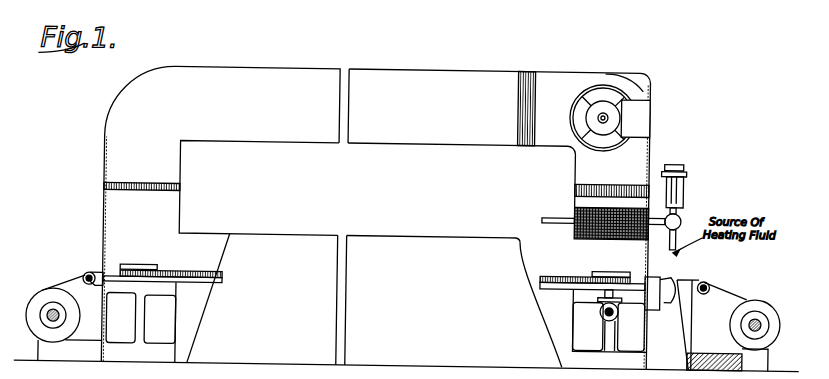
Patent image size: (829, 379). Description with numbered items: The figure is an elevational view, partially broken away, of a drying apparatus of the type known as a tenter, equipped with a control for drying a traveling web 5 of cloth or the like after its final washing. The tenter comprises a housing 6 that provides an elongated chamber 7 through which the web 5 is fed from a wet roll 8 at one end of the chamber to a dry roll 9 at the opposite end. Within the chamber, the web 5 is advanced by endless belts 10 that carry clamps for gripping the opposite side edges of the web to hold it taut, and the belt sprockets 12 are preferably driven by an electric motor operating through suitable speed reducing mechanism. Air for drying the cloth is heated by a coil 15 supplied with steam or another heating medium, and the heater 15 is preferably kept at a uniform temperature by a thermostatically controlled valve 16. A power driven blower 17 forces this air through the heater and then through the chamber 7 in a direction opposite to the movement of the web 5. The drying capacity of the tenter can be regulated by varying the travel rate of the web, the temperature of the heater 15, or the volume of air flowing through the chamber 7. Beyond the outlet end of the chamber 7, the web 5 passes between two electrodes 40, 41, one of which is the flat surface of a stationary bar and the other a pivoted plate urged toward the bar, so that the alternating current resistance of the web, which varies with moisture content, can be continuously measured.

The traveling web 5 is at (69, 285).
The housing 6 is at (303, 242).
The elongated chamber 7 is at (214, 246).
The wet roll 8 is at (44, 296).
The dry roll 9 is at (766, 302).
The endless belts 10 is at (196, 278).
The belt sprockets 12 is at (613, 269).
The coil 15 is at (592, 237).
The thermostatically controlled valve 16 is at (688, 191).
The power driven blower 17 is at (606, 137).
The electrode 40 is at (673, 276).
The electrode 41 is at (684, 325).